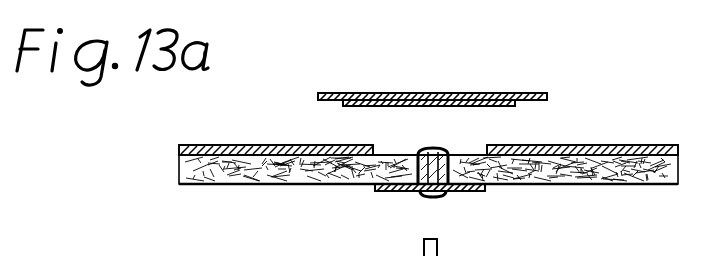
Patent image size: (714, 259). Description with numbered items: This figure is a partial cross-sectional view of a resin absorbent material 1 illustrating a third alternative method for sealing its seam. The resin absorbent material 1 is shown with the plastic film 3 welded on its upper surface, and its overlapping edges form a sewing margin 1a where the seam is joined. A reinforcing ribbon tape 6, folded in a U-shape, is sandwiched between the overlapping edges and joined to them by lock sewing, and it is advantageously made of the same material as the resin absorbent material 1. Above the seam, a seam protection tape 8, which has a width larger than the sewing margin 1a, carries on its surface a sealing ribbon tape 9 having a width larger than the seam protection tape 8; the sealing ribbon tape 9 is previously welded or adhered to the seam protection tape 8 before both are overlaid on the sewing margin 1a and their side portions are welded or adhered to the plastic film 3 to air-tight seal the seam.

The resin absorbent material 1 is at (281, 177).
The sewing margin 1a is at (468, 153).
The plastic film 3 is at (620, 147).
The reinforcing ribbon tape 6 is at (480, 193).
The seam protection tape 8 is at (350, 108).
The sealing ribbon tape 9 is at (487, 93).